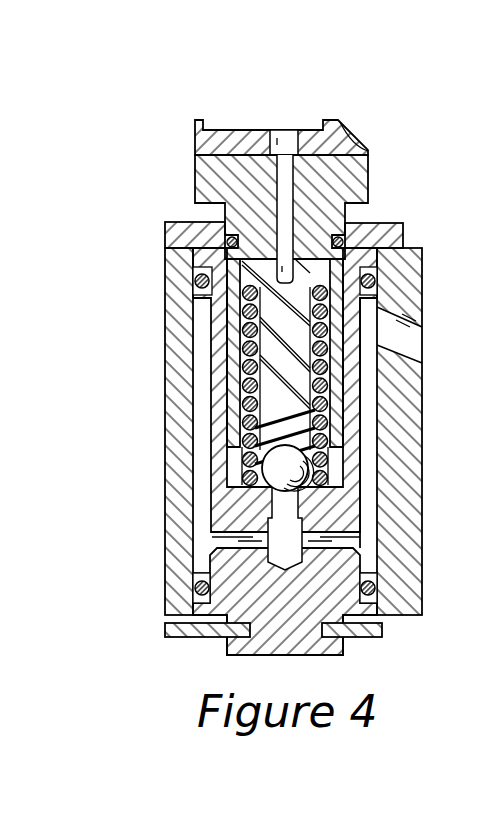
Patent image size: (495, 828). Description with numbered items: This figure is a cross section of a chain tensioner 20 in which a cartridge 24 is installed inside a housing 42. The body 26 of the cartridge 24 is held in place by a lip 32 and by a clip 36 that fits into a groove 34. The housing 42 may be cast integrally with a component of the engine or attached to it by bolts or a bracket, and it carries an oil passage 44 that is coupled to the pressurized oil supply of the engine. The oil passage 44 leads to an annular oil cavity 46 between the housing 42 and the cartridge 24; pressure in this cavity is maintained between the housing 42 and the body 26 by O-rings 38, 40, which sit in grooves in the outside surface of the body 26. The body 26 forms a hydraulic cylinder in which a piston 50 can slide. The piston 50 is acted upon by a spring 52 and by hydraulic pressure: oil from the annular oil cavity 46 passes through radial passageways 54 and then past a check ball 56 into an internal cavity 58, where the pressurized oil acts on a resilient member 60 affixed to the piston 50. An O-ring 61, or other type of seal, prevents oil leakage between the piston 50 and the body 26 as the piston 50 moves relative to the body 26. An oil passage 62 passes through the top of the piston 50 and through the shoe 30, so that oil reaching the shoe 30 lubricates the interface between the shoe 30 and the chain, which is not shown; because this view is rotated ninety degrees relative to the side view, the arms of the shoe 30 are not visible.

The chain tensioner 20 is at (267, 375).
The cartridge 24 is at (245, 202).
The body 26 is at (218, 362).
The shoe 30 is at (250, 145).
The lip 32 is at (190, 222).
The groove 34 is at (248, 626).
The clip 36 is at (370, 633).
The O-ring 38 is at (195, 289).
The O-ring 40 is at (373, 600).
The housing 42 is at (183, 487).
The oil passage 44 is at (413, 340).
The annular oil cavity 46 is at (370, 532).
The piston 50 is at (240, 428).
The spring 52 is at (337, 417).
The radial passageways 54 is at (362, 592).
The check ball 56 is at (303, 490).
The internal cavity 58 is at (240, 468).
The resilient member 60 is at (314, 265).
The O-ring 61 is at (343, 240).
The oil passage 62 is at (285, 177).